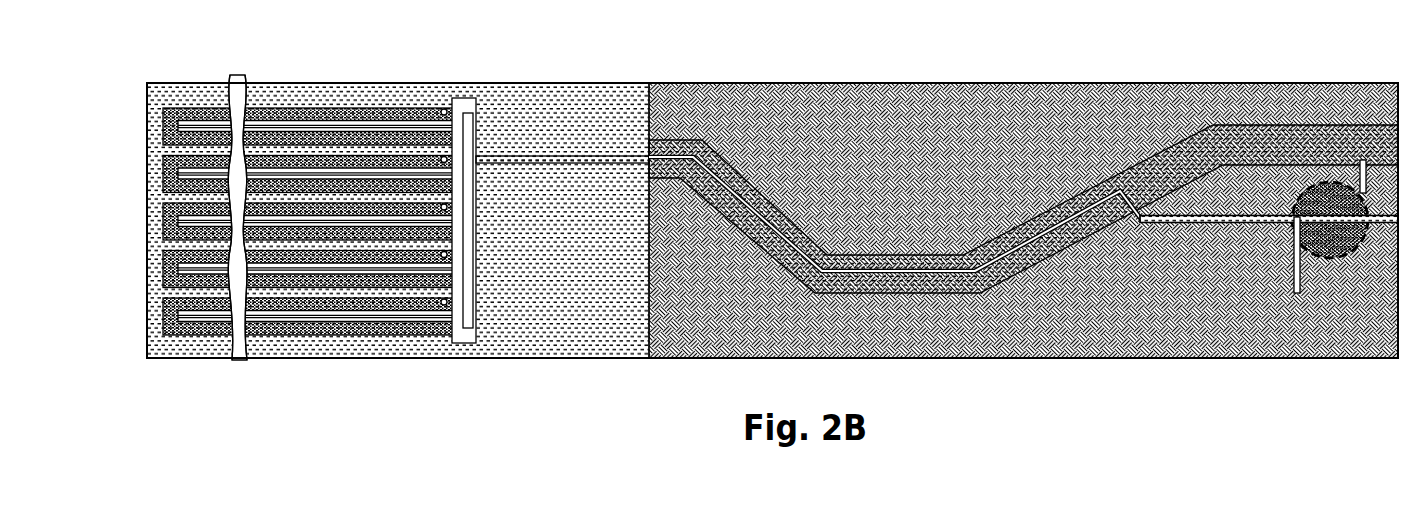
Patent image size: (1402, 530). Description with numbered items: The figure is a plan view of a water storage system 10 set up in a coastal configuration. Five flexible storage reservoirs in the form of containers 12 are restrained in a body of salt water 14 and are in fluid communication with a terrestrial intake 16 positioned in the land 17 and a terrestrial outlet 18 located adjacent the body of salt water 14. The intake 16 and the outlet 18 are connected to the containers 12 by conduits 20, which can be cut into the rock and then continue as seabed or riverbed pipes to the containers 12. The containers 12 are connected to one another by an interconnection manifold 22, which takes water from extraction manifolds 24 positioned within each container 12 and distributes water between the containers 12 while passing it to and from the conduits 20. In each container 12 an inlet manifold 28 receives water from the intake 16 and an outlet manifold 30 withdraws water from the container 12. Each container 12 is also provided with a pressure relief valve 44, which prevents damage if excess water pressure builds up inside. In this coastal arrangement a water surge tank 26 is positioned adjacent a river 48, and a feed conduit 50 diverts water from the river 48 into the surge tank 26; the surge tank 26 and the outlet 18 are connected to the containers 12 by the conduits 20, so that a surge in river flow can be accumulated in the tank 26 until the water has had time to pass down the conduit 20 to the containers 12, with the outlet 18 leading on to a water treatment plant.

The water storage system 10 is at (742, 215).
The containers 12 is at (270, 268).
The body of salt water 14 is at (532, 108).
The terrestrial intake 16 is at (1207, 228).
The land 17 is at (850, 110).
The terrestrial outlet 18 is at (1297, 283).
The conduits 20 is at (907, 277).
The interconnection manifold 22 is at (478, 313).
The extraction manifolds 24 is at (297, 313).
The water surge tank 26 is at (1338, 256).
The inlet manifold 28 is at (213, 323).
The outlet manifold 30 is at (200, 316).
The pressure relief valve 44 is at (444, 258).
The river 48 is at (1065, 195).
The feed conduit 50 is at (1360, 170).